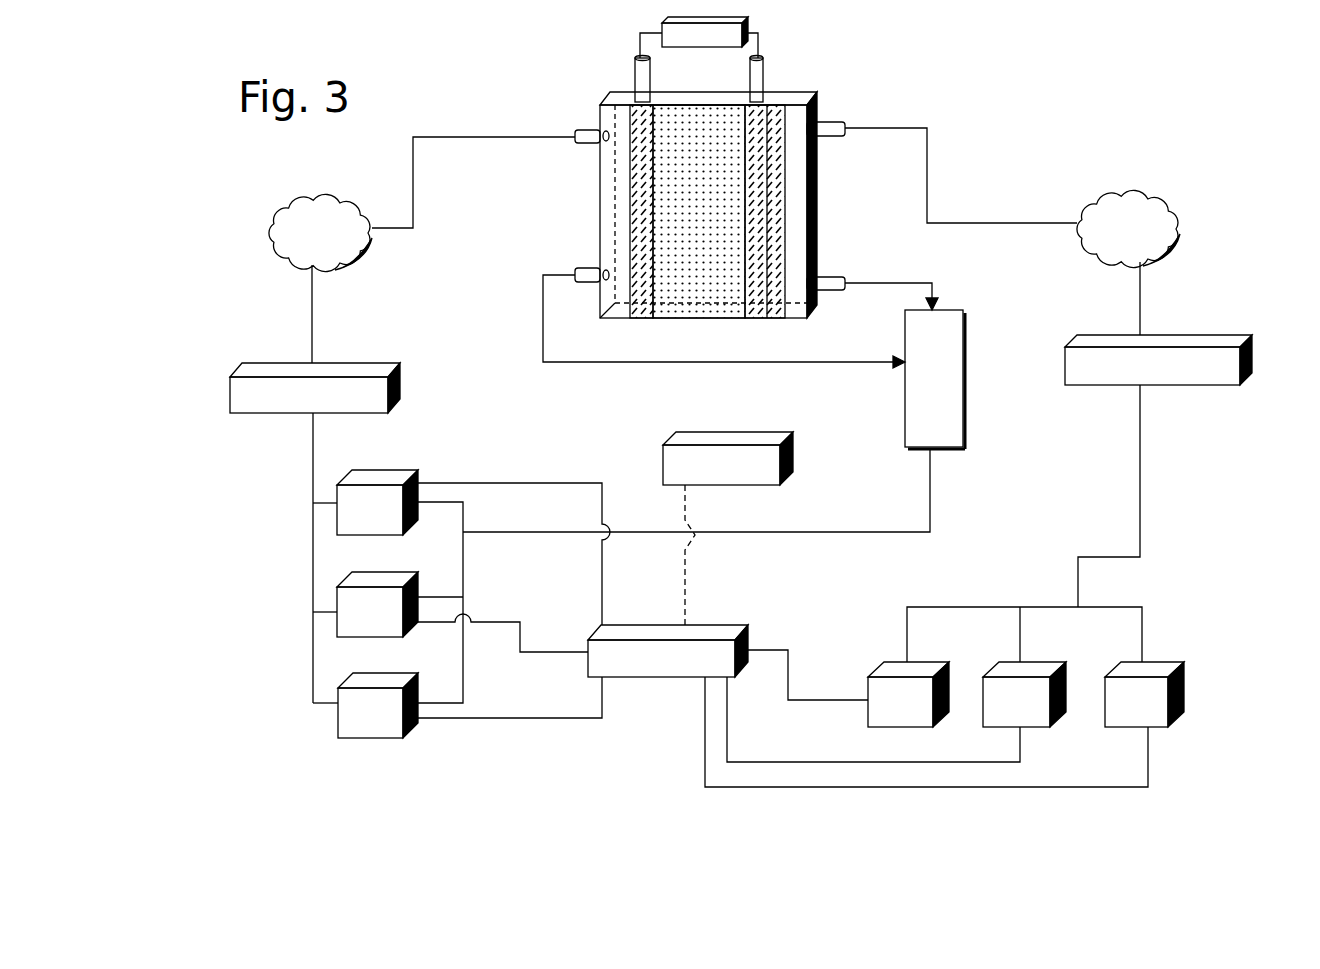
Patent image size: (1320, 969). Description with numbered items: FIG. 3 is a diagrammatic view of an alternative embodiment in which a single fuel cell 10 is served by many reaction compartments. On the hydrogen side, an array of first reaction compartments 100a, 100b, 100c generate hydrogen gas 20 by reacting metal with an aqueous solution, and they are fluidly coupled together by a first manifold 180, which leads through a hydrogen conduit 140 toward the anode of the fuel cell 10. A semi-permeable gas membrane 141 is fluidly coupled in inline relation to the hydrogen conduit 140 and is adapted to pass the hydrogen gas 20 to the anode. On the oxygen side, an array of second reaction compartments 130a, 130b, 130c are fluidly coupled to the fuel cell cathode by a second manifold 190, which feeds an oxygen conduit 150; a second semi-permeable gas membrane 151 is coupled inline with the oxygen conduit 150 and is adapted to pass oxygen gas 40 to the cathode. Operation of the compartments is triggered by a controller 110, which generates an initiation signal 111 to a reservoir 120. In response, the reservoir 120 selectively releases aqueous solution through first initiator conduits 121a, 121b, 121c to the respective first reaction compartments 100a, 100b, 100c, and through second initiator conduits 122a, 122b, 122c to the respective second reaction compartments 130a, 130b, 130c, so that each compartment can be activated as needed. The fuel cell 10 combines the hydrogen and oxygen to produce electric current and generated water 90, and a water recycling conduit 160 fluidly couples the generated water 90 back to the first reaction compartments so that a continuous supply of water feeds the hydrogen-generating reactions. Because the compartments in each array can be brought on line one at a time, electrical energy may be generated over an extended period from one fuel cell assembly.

The fuel cell 10 is at (850, 71).
The hydrogen gas 20 is at (310, 197).
The oxygen gas 40 is at (1118, 190).
The generated water 90 is at (966, 362).
The controller 110 is at (757, 432).
The initiation signal 111 is at (683, 600).
The reservoir 120 is at (710, 625).
The first initiator conduit 121a is at (493, 483).
The first initiator conduit 121b is at (493, 622).
The first initiator conduit 121c is at (480, 718).
The second initiator conduit 122a is at (782, 650).
The second initiator conduit 122b is at (765, 762).
The second initiator conduit 122c is at (1058, 787).
The second reaction compartment 130a is at (923, 662).
The second reaction compartment 130b is at (1040, 662).
The second reaction compartment 130c is at (1157, 662).
The first reaction compartment 100a is at (390, 470).
The first reaction compartment 100b is at (390, 572).
The first reaction compartment 100c is at (390, 673).
The hydrogen conduit 140 is at (310, 338).
The semi-permeable gas membrane 141 is at (363, 363).
The oxygen conduit 150 is at (1145, 482).
The semi-permeable gas membrane 151 is at (1198, 335).
The water recycling conduit 160 is at (797, 532).
The first manifold 180 is at (313, 560).
The second manifold 190 is at (1050, 607).